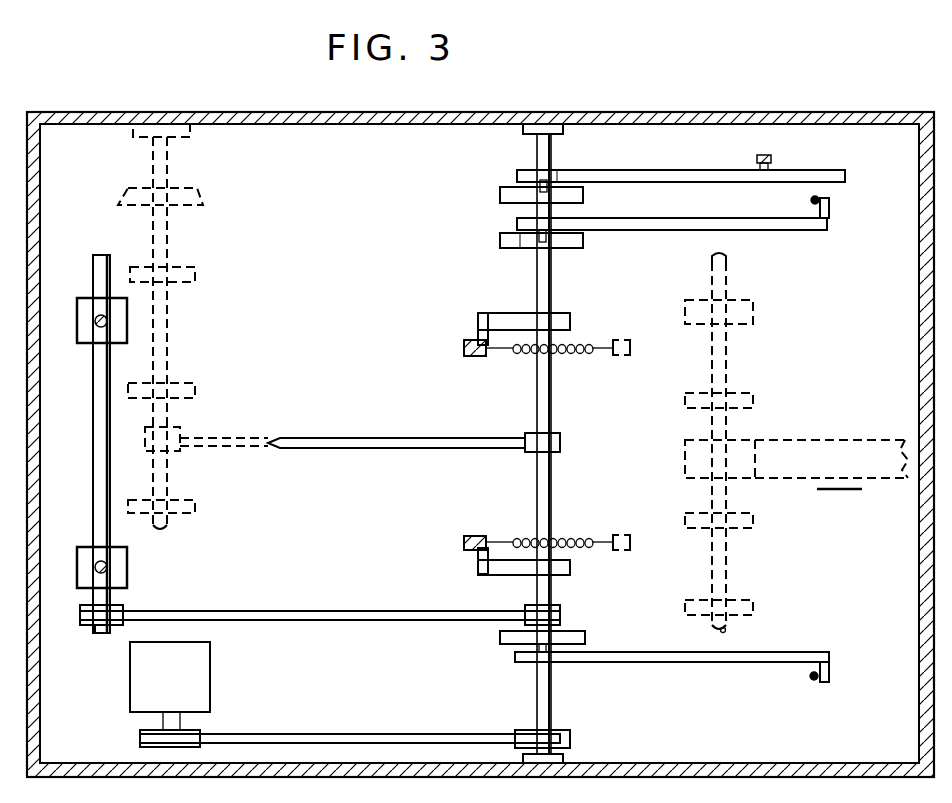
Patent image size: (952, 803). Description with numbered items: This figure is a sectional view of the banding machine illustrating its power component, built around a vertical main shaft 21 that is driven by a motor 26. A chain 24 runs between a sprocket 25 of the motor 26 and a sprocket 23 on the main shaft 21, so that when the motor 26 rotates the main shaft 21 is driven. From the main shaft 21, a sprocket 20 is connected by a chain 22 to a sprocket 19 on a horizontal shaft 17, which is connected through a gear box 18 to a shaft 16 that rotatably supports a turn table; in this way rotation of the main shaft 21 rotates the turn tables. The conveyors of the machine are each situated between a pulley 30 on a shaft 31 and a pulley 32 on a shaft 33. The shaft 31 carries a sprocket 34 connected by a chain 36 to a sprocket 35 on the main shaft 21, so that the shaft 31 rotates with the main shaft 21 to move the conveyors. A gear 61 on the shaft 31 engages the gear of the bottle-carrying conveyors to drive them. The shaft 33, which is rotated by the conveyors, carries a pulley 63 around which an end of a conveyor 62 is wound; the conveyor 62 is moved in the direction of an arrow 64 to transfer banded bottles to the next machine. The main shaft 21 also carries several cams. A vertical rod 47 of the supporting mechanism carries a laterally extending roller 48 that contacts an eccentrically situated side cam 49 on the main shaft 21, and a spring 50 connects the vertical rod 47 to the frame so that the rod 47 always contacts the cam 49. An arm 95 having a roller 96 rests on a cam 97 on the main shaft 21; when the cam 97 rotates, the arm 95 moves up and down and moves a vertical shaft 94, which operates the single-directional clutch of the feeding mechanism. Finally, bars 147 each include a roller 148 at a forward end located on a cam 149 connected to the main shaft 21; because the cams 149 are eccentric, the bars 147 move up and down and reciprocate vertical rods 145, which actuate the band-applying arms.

The shaft 16 is at (98, 327).
The horizontal shaft 17 is at (102, 520).
The gear box 18 is at (78, 298).
The sprocket 19 is at (80, 620).
The sprocket 20 is at (566, 613).
The main shaft 21 is at (537, 510).
The chain 22 is at (282, 611).
The sprocket 23 is at (562, 726).
The chain 24 is at (374, 734).
The sprocket 25 is at (202, 746).
The motor 26 is at (208, 665).
The pulley 30 is at (205, 282).
The shaft 31 is at (172, 245).
The pulley 32 is at (755, 318).
The shaft 33 is at (740, 277).
The sprocket 34 is at (182, 429).
The sprocket 35 is at (559, 442).
The chain 36 is at (352, 450).
The vertical rod 47 is at (465, 348).
The roller 48 is at (479, 320).
The side cam 49 is at (520, 320).
The spring 50 is at (592, 356).
The gear 61 is at (201, 194).
The conveyor 62 is at (845, 440).
The pulley 63 is at (745, 433).
The arrow 64 is at (840, 489).
The vertical shaft 94 is at (772, 159).
The arm 95 is at (715, 174).
The roller 96 is at (531, 196).
The cam 97 is at (517, 180).
The vertical rod 145 is at (818, 198).
The bar 147 is at (631, 222).
The roller 148 is at (552, 245).
The cam 149 is at (506, 238).